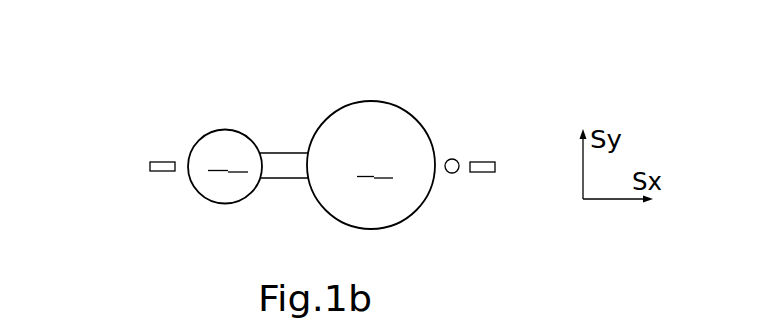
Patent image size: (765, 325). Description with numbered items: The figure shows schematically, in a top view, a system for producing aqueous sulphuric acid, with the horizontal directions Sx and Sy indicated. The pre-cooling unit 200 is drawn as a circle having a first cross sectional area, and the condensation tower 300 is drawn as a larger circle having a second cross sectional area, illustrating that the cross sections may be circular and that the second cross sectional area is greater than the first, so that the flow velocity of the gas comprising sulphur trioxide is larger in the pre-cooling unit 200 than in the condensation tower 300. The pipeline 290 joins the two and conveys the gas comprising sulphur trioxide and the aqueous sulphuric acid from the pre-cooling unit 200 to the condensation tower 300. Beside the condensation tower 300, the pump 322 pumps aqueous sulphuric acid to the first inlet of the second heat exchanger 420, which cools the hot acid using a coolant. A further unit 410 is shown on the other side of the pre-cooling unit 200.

The pre-cooling unit 200 is at (210, 131).
The pipeline 290 is at (282, 167).
The condensation tower 300 is at (380, 101).
The pump 322 is at (457, 158).
The first rectangular marker 410 is at (148, 163).
The second heat exchanger 420 is at (489, 160).